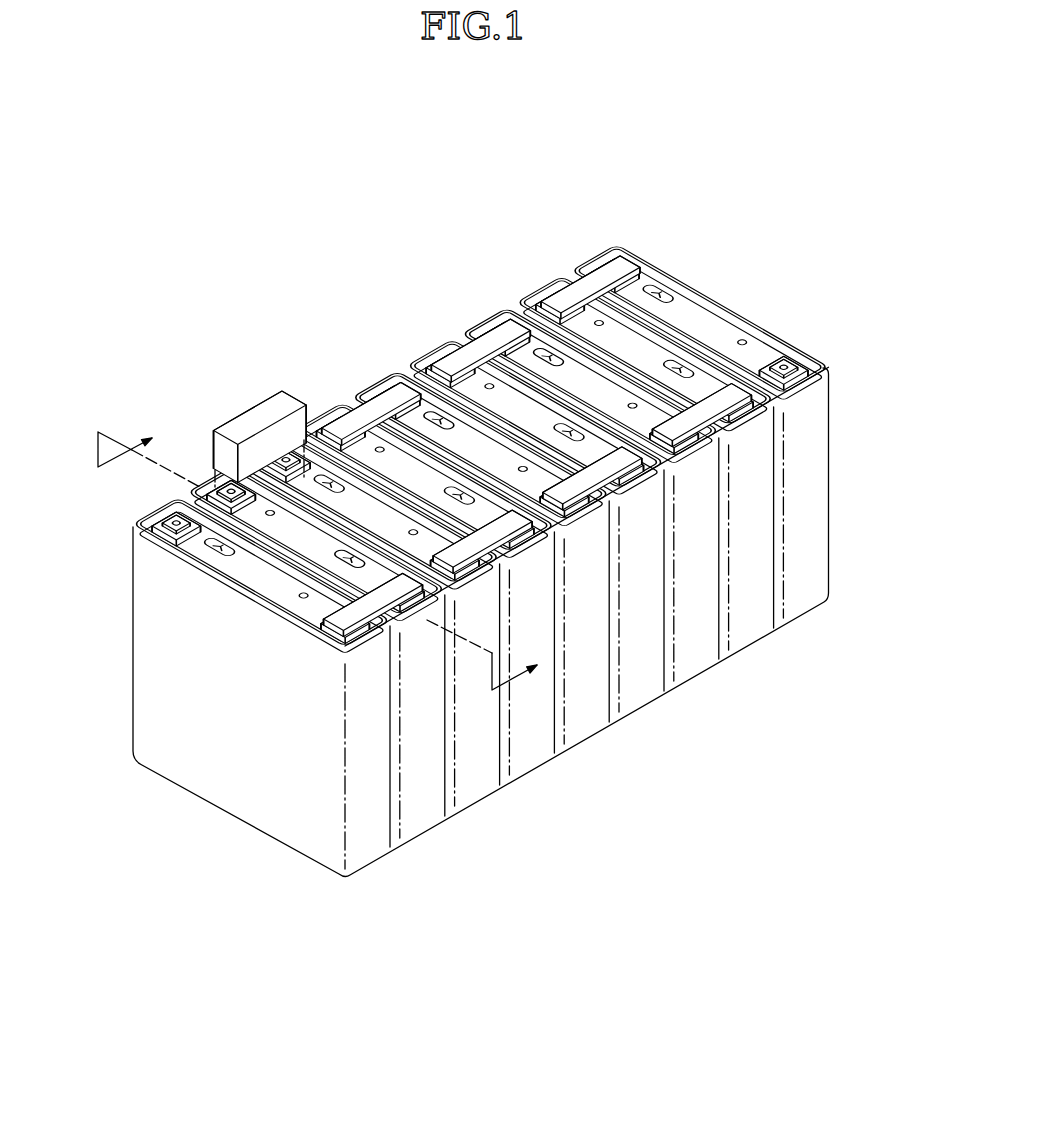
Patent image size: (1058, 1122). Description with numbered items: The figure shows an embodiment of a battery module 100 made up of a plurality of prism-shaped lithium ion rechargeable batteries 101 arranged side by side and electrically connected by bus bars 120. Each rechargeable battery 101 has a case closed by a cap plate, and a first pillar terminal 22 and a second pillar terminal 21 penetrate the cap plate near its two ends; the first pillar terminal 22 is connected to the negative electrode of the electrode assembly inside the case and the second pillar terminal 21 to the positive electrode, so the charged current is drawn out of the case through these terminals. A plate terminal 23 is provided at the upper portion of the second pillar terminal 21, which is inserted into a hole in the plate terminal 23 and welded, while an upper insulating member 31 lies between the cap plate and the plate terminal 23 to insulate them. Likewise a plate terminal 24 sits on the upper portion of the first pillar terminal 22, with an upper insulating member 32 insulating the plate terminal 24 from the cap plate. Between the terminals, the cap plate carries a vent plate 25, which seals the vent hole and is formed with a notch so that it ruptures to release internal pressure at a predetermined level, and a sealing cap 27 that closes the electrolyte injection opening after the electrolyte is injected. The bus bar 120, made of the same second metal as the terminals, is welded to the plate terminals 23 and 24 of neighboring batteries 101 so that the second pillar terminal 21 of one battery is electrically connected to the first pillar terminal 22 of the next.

The battery module 100 is at (362, 283).
The rechargeable battery 101 is at (488, 807).
The bus bar 120 is at (249, 402).
The second pillar terminal 21 is at (162, 519).
The first pillar terminal 22 is at (230, 488).
The plate terminal 23 is at (176, 527).
The plate terminal 24 is at (212, 488).
The vent plate 25 is at (672, 301).
The sealing cap 27 is at (745, 347).
The upper insulating member 31 is at (190, 532).
The upper insulating member 32 is at (204, 483).